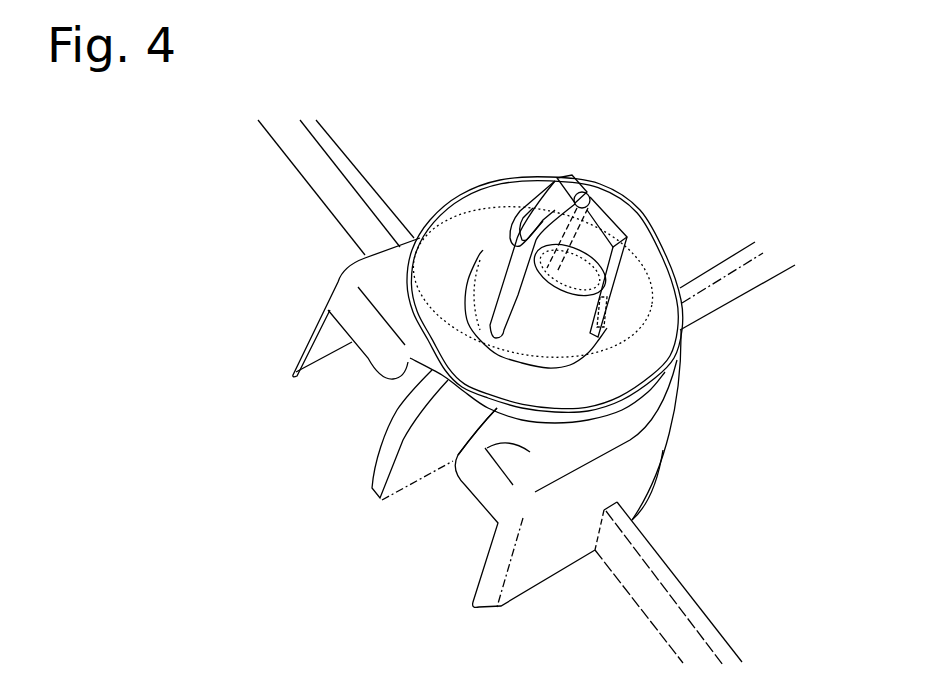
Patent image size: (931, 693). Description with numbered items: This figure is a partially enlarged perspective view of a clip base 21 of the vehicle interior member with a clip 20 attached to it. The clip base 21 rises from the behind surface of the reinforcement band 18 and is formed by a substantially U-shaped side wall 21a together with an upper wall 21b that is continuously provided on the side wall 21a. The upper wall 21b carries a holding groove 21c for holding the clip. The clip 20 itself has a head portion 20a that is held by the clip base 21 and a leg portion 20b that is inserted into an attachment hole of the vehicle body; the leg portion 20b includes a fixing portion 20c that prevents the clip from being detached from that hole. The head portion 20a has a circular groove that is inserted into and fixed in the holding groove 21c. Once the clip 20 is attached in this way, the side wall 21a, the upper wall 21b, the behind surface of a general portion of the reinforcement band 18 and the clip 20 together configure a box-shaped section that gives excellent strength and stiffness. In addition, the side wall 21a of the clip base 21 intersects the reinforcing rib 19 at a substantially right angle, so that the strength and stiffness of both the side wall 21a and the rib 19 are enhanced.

The reinforcement band 18 is at (448, 575).
The reinforcing rib 19 is at (402, 482).
The clip 20 is at (630, 244).
The head portion 20a is at (411, 356).
The leg portion 20b is at (522, 208).
The fixing portion 20c is at (600, 340).
The clip base 21 is at (674, 425).
The side wall 21a is at (645, 482).
The upper wall 21b is at (466, 484).
The holding groove 21c is at (408, 372).